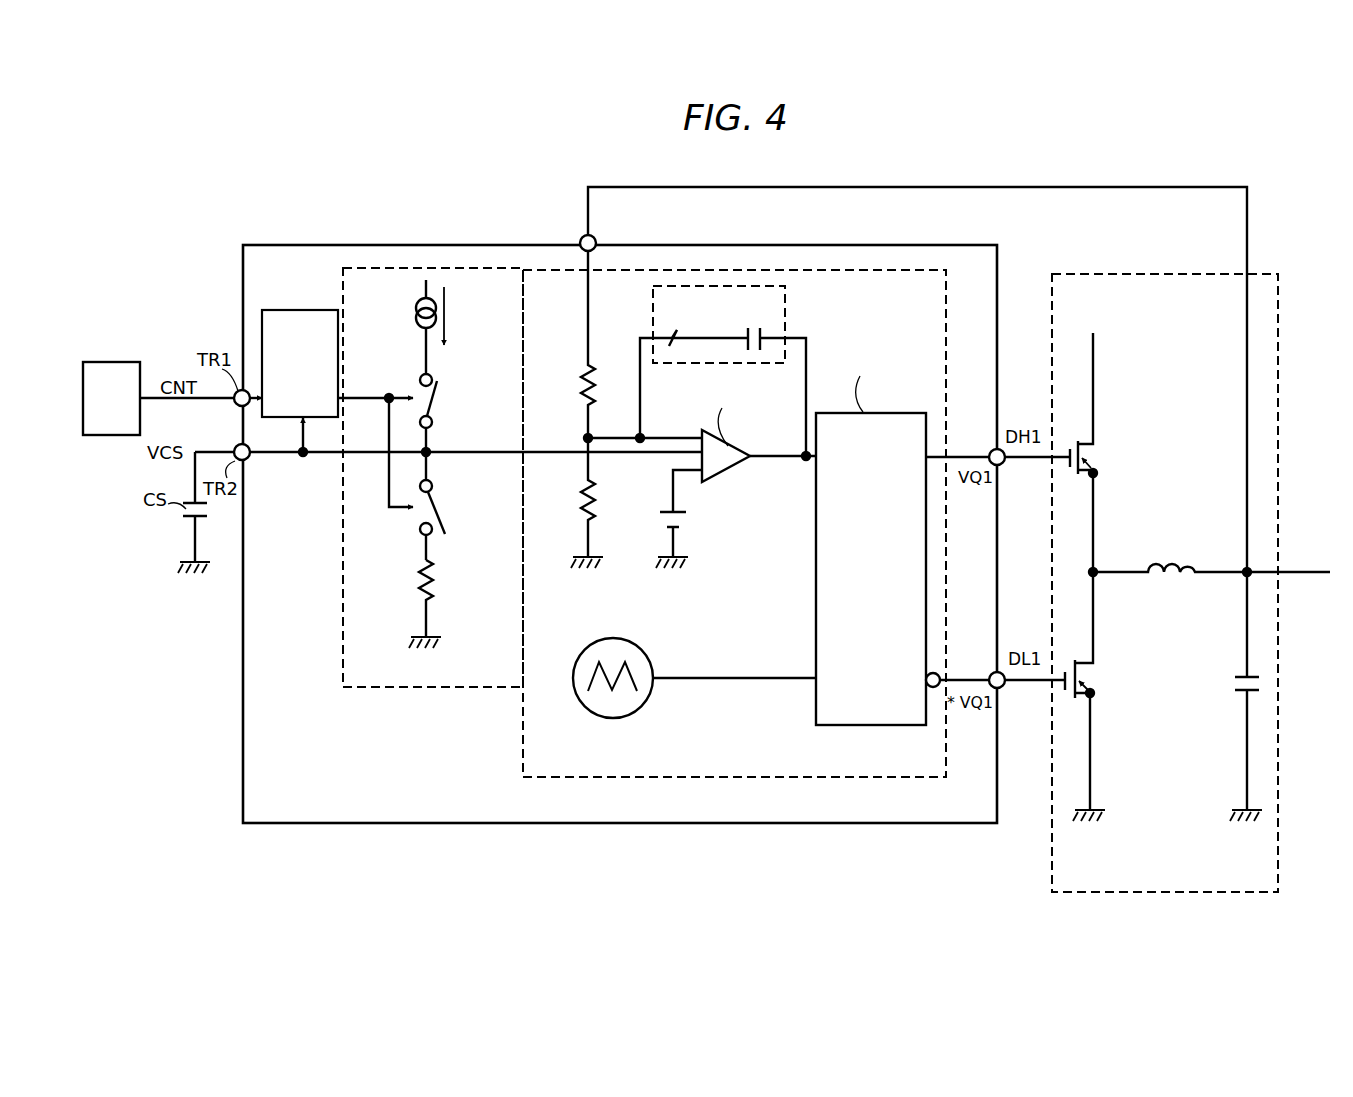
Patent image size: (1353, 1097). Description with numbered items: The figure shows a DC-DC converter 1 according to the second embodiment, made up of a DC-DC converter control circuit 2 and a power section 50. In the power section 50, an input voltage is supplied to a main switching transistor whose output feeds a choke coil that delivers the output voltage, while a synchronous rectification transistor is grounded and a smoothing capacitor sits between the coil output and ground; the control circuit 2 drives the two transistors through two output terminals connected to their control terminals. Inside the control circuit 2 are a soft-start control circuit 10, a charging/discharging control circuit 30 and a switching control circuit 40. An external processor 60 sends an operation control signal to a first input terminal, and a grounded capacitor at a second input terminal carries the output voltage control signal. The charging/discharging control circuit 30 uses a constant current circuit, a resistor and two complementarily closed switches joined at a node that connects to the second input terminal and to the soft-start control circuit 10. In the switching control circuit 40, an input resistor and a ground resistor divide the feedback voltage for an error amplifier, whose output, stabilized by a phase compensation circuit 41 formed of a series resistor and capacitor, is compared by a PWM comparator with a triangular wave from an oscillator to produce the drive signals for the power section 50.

The DC-DC converter 1 is at (1280, 204).
The DC-DC converter control circuit 2 is at (372, 244).
The soft-start control circuit 10 is at (283, 308).
The charging/discharging control circuit 30 is at (343, 290).
The switching control circuit 40 is at (698, 270).
The phase compensation circuit 41 is at (787, 310).
The power section 50 is at (1130, 273).
The CPU 60 is at (111, 361).